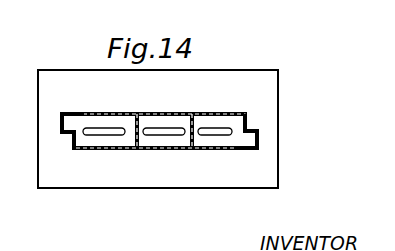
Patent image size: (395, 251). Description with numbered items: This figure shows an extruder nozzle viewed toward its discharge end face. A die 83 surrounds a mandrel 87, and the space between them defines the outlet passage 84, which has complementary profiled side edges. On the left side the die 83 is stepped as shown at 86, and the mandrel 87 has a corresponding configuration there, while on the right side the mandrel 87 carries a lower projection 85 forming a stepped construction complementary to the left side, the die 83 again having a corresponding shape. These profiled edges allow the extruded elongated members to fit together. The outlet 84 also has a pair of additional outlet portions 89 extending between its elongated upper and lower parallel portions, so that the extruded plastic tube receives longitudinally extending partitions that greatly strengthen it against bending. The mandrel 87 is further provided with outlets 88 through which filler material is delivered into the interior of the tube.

The die 83 is at (74, 87).
The outlet passage 84 is at (213, 112).
The lower projection 85 is at (250, 140).
The step of the die 86 is at (65, 143).
The mandrel 87 is at (107, 142).
The outlets for filler material 88 is at (165, 138).
The additional outlet portions 89 is at (201, 148).